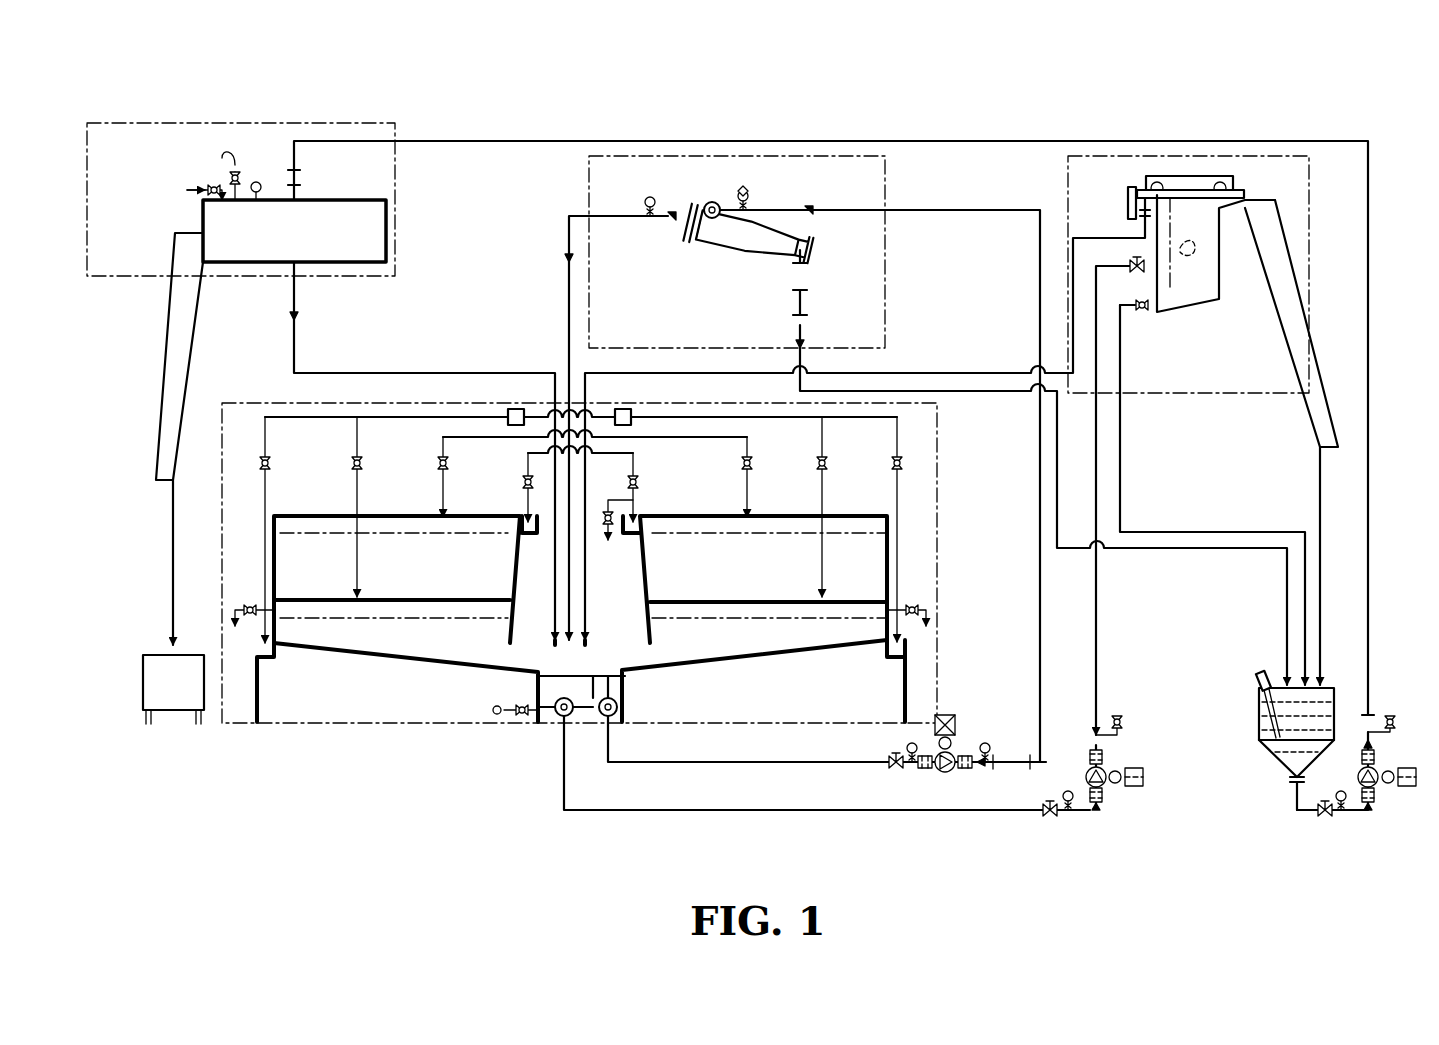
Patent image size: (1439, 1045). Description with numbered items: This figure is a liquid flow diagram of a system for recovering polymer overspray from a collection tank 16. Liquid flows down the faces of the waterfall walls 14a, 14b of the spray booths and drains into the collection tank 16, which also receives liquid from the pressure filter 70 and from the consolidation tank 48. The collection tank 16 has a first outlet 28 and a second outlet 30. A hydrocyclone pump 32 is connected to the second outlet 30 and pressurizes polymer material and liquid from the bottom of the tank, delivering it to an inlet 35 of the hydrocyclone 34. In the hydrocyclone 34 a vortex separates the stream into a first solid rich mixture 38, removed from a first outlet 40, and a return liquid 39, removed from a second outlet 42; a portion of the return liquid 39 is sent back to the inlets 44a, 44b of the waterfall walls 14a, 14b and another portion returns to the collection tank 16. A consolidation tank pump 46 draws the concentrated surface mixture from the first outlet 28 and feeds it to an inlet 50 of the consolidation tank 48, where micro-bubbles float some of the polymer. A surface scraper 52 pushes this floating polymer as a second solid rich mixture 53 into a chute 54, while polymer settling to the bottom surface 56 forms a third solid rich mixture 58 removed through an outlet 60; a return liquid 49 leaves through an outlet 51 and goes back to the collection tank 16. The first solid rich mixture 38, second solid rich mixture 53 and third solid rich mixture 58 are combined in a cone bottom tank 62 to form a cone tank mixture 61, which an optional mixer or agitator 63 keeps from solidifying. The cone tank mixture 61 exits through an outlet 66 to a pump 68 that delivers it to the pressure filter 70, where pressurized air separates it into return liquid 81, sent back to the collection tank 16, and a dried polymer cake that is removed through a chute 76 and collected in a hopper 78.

The pressure filter 70 is at (188, 80).
The chute 76 is at (178, 317).
The hopper 78 is at (143, 672).
The return liquid 81 is at (300, 292).
The second outlet 42 is at (688, 220).
The inlet 35 is at (712, 202).
The hydrocyclone 34 is at (766, 226).
The first outlet 40 is at (812, 262).
The return liquid 39 is at (566, 262).
The first solid rich mixture 38 is at (935, 388).
The inlet 44a is at (516, 404).
The inlet 44b is at (623, 404).
The waterfall wall 14a is at (415, 555).
The waterfall wall 14b is at (713, 552).
The collection tank 16 is at (445, 650).
The return liquid 49 is at (585, 590).
The first outlet 28 is at (558, 716).
The second outlet 30 is at (605, 718).
The hydrocyclone pump 32 is at (942, 778).
The consolidation tank 48 is at (1205, 168).
The surface scraper 52 is at (1160, 182).
The outlet 51 is at (1128, 228).
The bottom surface 56 is at (1192, 307).
The inlet 50 is at (1133, 263).
The chute 54 is at (1300, 318).
The outlet 60 is at (1158, 548).
The third solid rich mixture 58 is at (1225, 532).
The second solid rich mixture 53 is at (1321, 597).
The consolidation tank pump 46 is at (1092, 826).
The cone bottom tank 62 is at (1258, 733).
The cone tank mixture 61 is at (1278, 748).
The mixer or agitator 63 is at (1258, 678).
The outlet 66 is at (1295, 785).
The pump 68 is at (1335, 840).